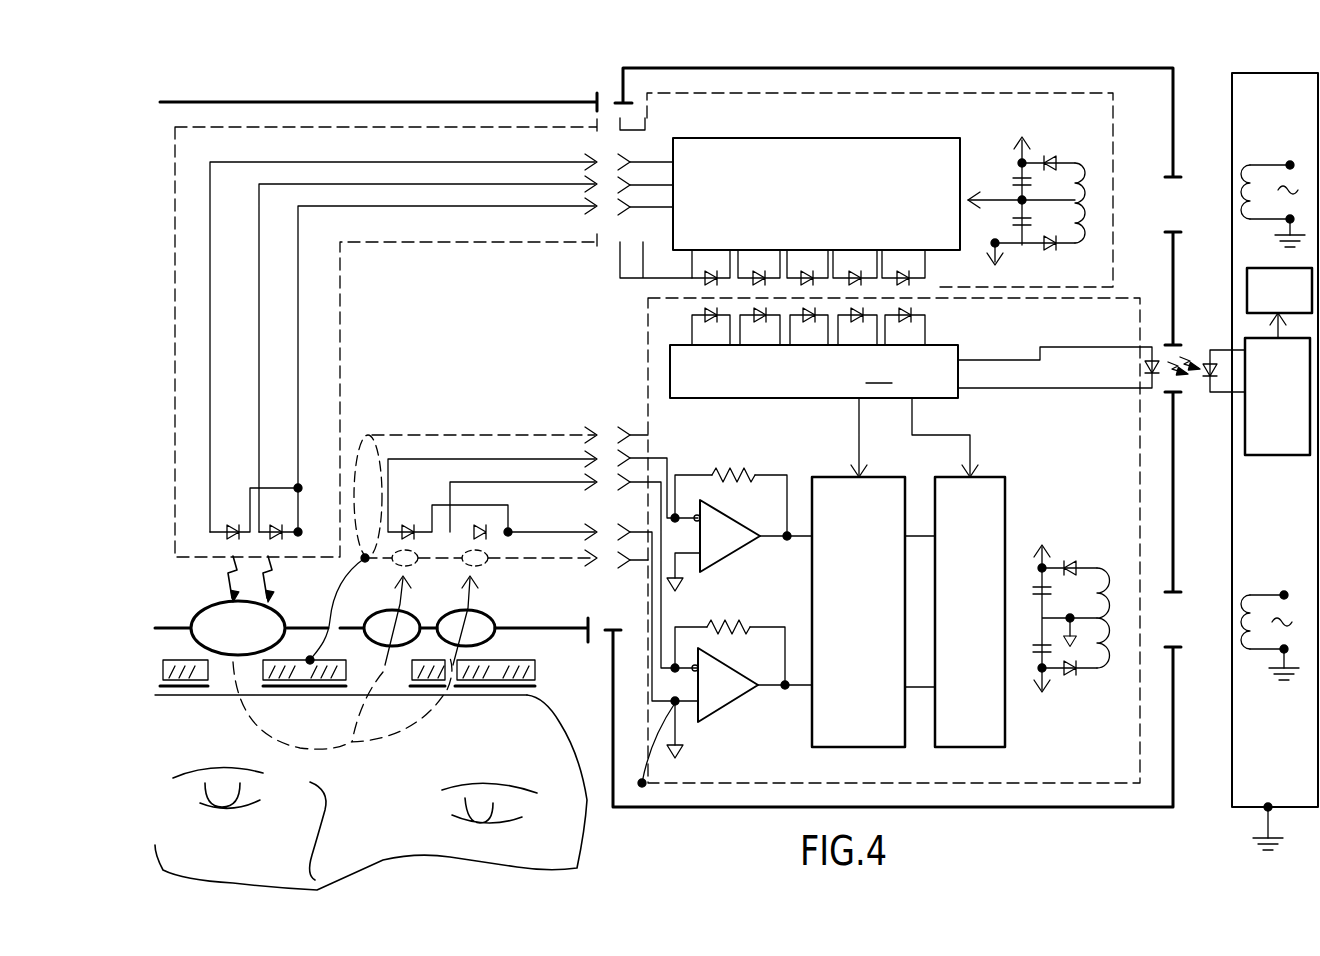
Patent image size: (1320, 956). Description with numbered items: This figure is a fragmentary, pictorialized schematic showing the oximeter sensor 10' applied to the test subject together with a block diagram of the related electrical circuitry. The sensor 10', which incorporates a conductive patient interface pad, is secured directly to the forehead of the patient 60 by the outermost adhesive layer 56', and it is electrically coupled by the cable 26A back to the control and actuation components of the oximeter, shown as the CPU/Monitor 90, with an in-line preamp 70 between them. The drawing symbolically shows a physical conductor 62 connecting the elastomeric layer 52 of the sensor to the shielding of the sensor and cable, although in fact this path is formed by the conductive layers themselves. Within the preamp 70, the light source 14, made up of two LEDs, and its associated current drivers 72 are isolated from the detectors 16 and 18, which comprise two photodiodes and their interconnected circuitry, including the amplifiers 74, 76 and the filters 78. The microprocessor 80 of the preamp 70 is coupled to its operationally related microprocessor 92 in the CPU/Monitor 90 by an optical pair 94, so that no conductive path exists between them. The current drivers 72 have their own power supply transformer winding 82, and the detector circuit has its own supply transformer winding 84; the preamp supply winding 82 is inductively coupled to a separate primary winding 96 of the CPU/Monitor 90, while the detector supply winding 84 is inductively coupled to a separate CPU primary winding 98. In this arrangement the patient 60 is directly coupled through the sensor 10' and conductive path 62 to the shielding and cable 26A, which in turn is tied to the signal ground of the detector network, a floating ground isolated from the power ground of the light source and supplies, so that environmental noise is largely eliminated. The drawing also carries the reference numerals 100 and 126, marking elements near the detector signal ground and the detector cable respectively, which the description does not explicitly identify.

The sensor 10' is at (376, 357).
The light source 14 is at (285, 609).
The detector 16 is at (406, 606).
The detector 18 is at (484, 610).
The cable 26A is at (549, 428).
The elastomeric layer 52 is at (536, 672).
The outermost adhesive layer 56' is at (383, 699).
The patient 60 is at (555, 840).
The physical conductor 62 is at (337, 602).
The preamp 70 is at (900, 68).
The current drivers 72 is at (833, 138).
The amplifier 74 is at (723, 540).
The amplifier 76 is at (717, 690).
The filters 78 is at (855, 735).
The microprocessor 80 is at (879, 540).
The power supply transformer winding 82 is at (1090, 118).
The supply transformer winding 84 is at (1125, 625).
The CPU/Monitor 90 is at (1277, 73).
The microprocessor 92 is at (1258, 350).
The optical pair 94 is at (1188, 390).
The primary winding 96 is at (1262, 156).
The CPU primary winding 98 is at (1260, 662).
The signal ground 100 is at (648, 782).
The detector cable 126 is at (487, 433).